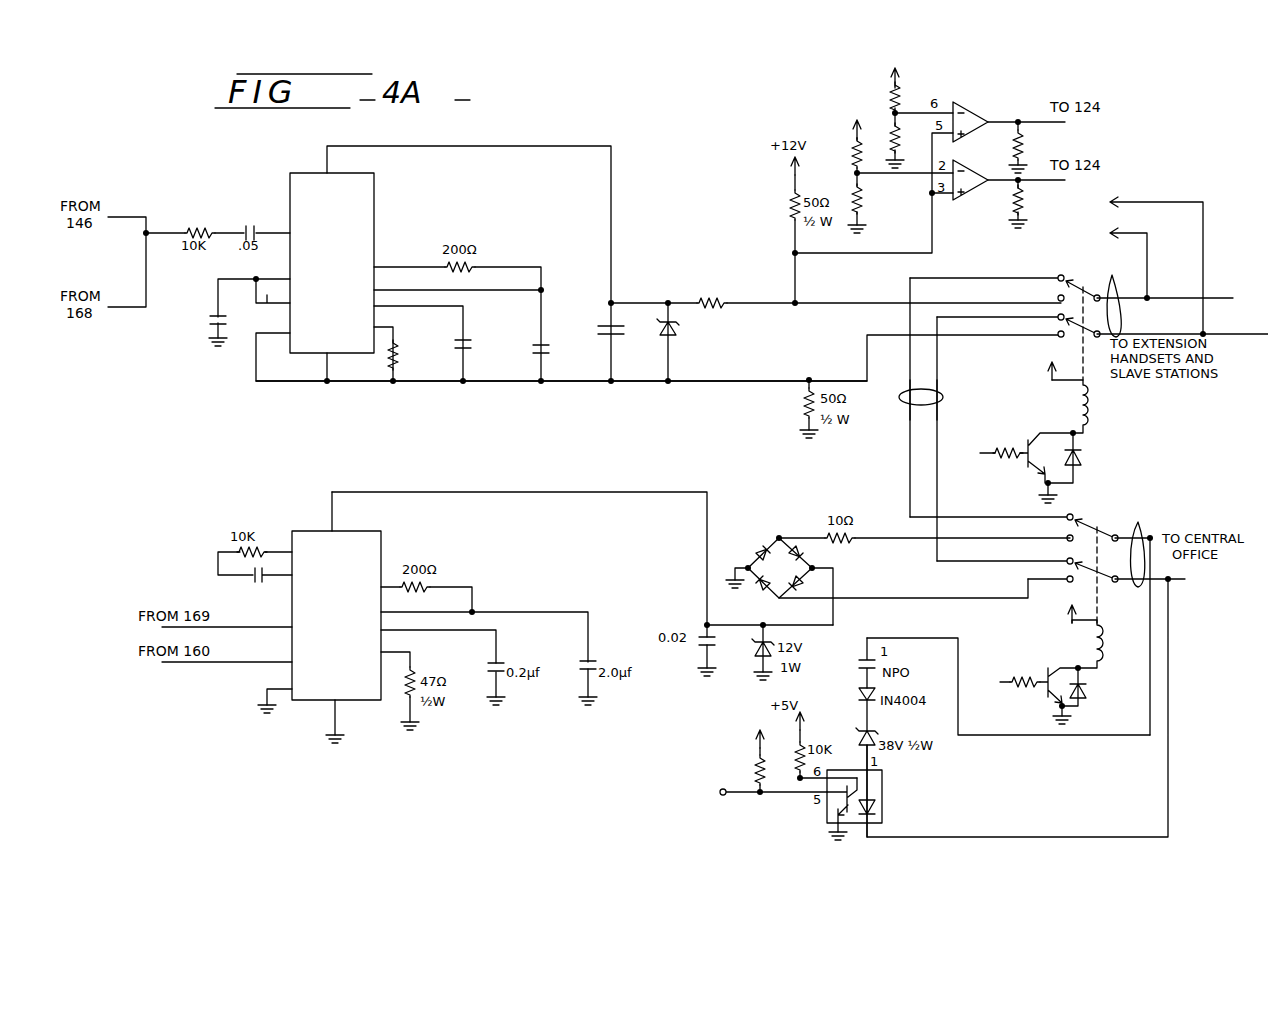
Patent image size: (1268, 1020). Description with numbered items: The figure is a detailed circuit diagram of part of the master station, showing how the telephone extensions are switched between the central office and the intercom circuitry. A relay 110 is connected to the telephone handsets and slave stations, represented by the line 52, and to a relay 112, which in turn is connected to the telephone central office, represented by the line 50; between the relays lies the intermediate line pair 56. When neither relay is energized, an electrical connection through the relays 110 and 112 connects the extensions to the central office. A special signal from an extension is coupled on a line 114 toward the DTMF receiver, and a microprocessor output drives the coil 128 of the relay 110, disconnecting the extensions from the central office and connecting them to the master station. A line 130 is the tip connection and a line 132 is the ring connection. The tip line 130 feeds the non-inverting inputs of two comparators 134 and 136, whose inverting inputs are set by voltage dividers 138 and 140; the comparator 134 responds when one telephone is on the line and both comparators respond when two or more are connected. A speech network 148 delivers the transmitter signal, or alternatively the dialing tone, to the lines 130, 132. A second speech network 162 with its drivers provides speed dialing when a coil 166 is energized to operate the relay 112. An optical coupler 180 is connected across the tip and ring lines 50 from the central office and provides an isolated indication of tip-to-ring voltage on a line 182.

The speech network 148 is at (374, 216).
The speech network 162 is at (383, 553).
The tip line 130 is at (745, 303).
The ring line 132 is at (733, 381).
The comparator 134 is at (972, 110).
The comparator 136 is at (970, 198).
The voltage divider 138 is at (895, 113).
The voltage divider 140 is at (857, 173).
The relay 110 is at (1068, 279).
The relay 112 is at (1072, 518).
The line 114 is at (1147, 244).
The line 52 is at (1125, 303).
The line 50 is at (1148, 547).
The line pair 56 is at (943, 397).
The coil 128 is at (1093, 397).
The coil 166 is at (1094, 641).
The optical coupler 180 is at (882, 800).
The line 182 is at (735, 792).